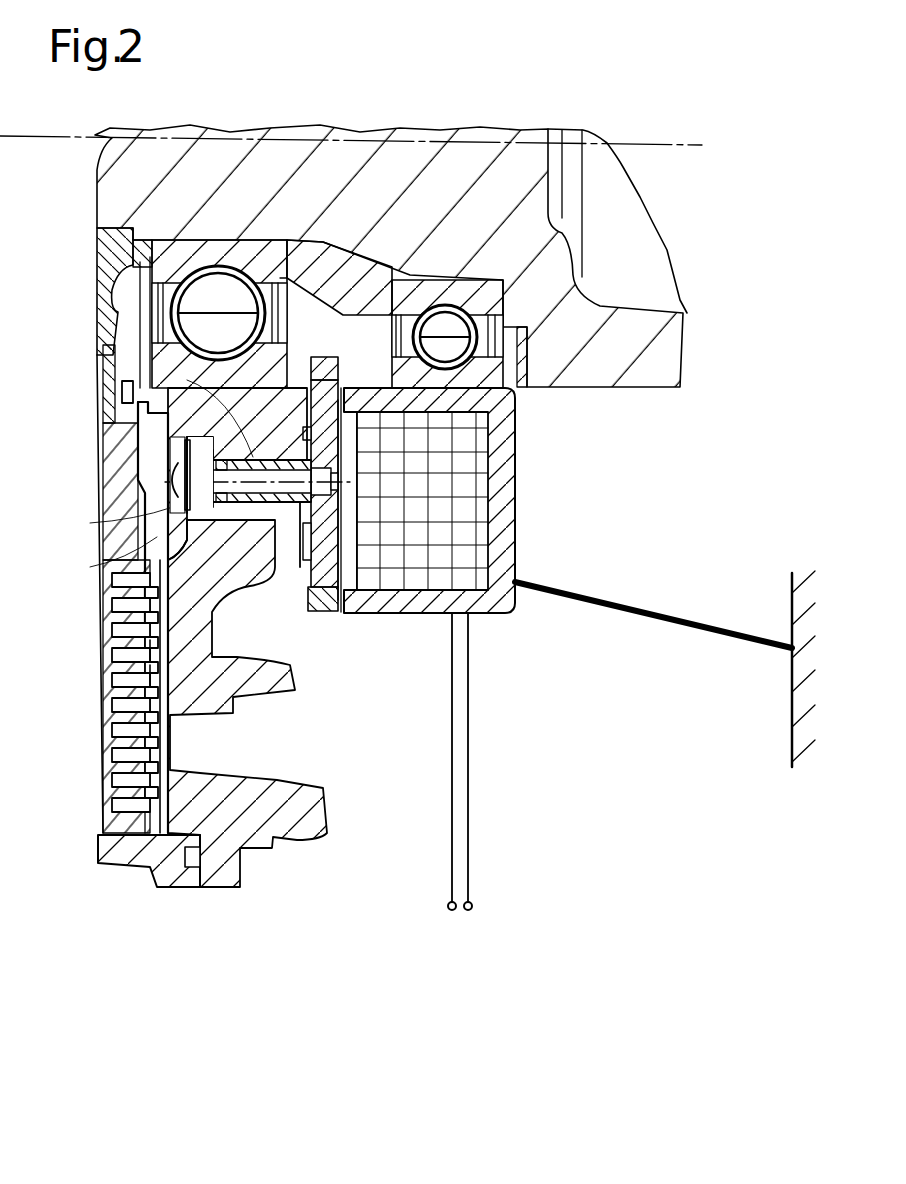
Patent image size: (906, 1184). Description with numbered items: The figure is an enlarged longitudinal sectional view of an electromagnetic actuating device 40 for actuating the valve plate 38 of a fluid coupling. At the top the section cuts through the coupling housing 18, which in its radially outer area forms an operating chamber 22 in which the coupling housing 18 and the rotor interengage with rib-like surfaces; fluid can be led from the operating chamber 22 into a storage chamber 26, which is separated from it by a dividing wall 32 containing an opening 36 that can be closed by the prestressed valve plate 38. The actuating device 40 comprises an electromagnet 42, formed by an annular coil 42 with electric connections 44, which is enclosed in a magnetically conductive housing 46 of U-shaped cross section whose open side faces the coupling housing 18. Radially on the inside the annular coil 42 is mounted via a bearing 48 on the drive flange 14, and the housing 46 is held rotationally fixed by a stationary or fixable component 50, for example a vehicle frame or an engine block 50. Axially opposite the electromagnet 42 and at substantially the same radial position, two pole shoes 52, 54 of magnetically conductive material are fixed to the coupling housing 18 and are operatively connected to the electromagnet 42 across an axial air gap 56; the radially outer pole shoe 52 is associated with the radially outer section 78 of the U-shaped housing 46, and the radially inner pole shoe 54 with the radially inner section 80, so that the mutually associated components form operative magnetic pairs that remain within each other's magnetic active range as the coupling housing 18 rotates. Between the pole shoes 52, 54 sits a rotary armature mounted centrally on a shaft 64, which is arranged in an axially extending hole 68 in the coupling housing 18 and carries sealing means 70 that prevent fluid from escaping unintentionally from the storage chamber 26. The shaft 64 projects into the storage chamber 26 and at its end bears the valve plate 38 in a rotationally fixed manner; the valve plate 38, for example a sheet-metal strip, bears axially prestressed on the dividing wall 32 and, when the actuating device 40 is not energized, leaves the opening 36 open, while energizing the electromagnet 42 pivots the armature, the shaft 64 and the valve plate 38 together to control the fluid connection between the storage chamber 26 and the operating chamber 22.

The drive flange 14 is at (650, 353).
The coupling housing 18 is at (216, 877).
The operating chamber 22 is at (150, 690).
The storage chamber 26 is at (180, 612).
The dividing wall 32 is at (157, 672).
The opening 36 is at (160, 640).
The valve plate 38 is at (170, 548).
The electromagnetic actuating device 40 is at (414, 682).
The electromagnet 42 is at (548, 622).
The electric connections 44 is at (458, 912).
The magnetically conductive housing 46 is at (517, 500).
The bearing 48 is at (498, 375).
The stationary or fixable component 50 is at (788, 765).
The radially outer pole shoe 52 is at (316, 614).
The radially inner pole shoe 54 is at (328, 368).
The axial air gap 56 is at (343, 614).
The shaft 64 is at (170, 507).
The hole 68 is at (122, 392).
The sealing means 70 is at (216, 500).
The radially outer section of the housing 78 is at (370, 614).
The radially inner section of the housing 80 is at (360, 387).